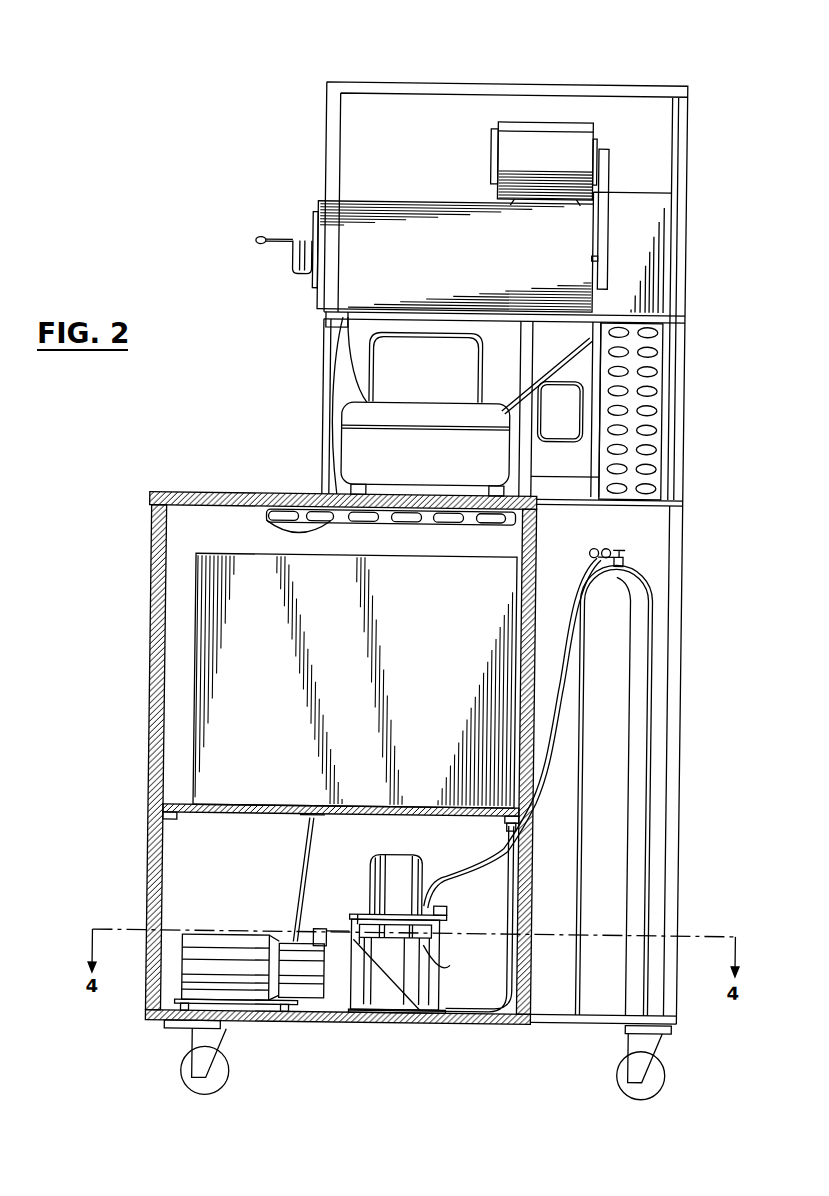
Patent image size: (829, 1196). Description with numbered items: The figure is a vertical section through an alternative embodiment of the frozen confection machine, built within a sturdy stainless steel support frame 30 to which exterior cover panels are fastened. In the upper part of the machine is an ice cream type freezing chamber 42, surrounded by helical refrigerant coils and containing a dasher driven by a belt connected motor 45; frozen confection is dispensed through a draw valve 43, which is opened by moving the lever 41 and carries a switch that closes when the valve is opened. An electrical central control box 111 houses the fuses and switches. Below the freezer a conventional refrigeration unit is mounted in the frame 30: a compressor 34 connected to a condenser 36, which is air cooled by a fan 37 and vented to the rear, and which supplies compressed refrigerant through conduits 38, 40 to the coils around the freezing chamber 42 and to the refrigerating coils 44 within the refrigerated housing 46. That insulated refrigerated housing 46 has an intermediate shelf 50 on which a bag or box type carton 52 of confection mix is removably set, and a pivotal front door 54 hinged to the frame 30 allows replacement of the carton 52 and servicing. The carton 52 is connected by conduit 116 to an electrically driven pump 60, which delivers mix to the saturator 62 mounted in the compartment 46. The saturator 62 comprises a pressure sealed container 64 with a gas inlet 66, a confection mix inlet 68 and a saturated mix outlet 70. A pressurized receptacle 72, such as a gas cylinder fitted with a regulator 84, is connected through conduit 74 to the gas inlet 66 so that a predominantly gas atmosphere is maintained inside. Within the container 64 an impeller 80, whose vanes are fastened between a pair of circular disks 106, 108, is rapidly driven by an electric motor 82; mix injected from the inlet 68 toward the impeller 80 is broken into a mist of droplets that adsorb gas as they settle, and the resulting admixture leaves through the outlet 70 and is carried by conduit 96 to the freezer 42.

The support frame 30 is at (672, 590).
The compressor 34 is at (407, 388).
The condenser 36 is at (647, 393).
The fan 37 is at (571, 415).
The conduit 38 is at (338, 345).
The conduit 40 is at (340, 422).
The lever 41 is at (256, 239).
The ice cream type freezing chamber 42 is at (454, 240).
The draw valve 43 is at (296, 257).
The refrigerating coils 44 is at (283, 512).
The belt connected motor 45 is at (553, 153).
The refrigerated housing 46 is at (528, 915).
The intermediate shelf 50 is at (252, 812).
The carton 52 is at (432, 613).
The pivotal front door 54 is at (152, 720).
The pump 60 is at (249, 973).
The saturator 62 is at (356, 1000).
The pressure sealed container 64 is at (457, 1015).
The gas inlet 66 is at (442, 882).
The confection mix inlet 68 is at (362, 942).
The saturated mix outlet 70 is at (440, 993).
The pressurized receptacle 72 is at (613, 808).
The conduit 74 is at (552, 750).
The impeller 80 is at (443, 923).
The electric motor 82 is at (382, 893).
The regulator 84 is at (606, 547).
The conduit 96 is at (517, 955).
The circular disk 106 is at (367, 923).
The circular disk 108 is at (440, 958).
The central control box 111 is at (640, 236).
The conduit 116 is at (305, 865).